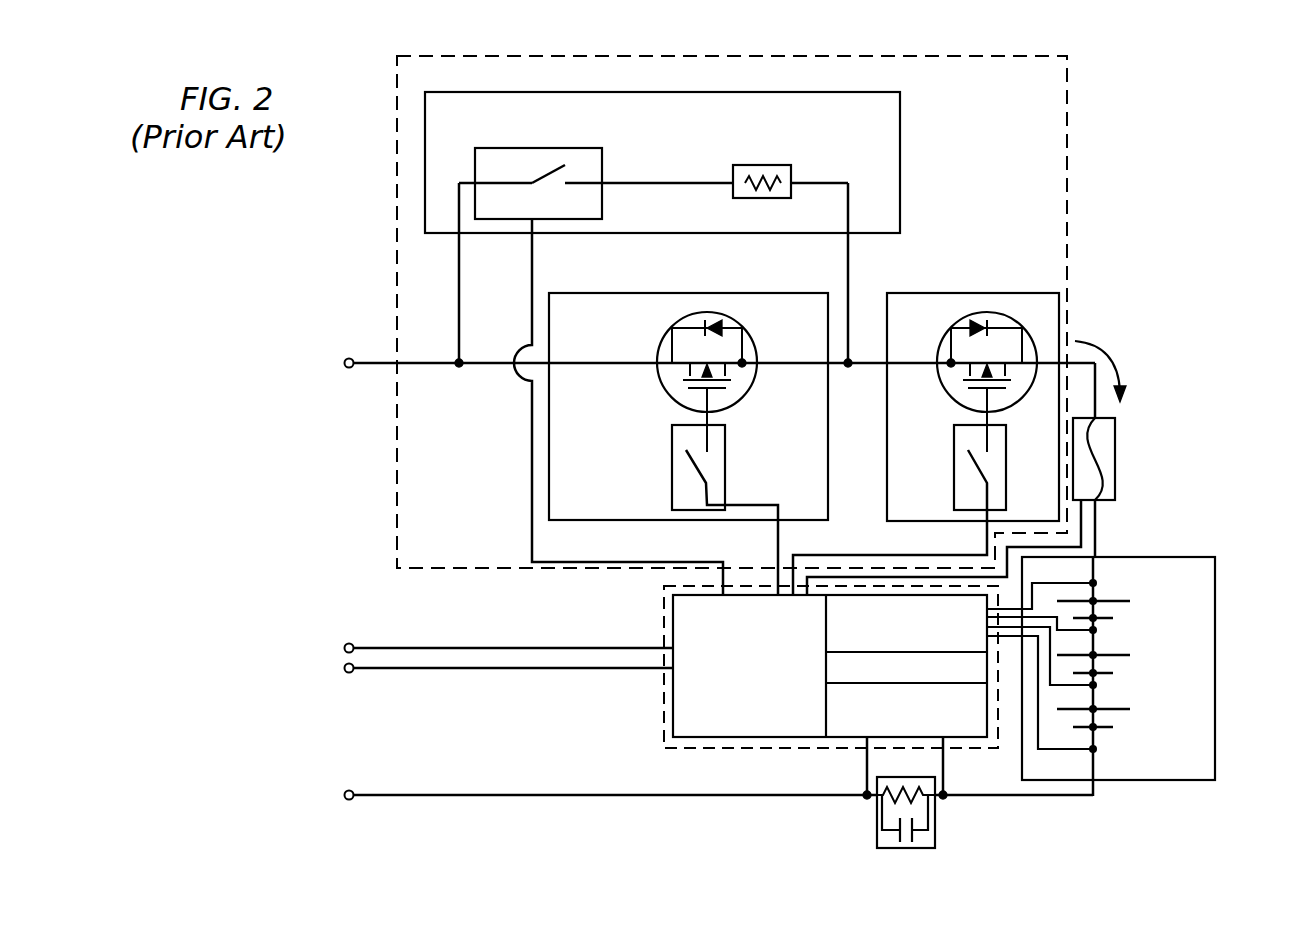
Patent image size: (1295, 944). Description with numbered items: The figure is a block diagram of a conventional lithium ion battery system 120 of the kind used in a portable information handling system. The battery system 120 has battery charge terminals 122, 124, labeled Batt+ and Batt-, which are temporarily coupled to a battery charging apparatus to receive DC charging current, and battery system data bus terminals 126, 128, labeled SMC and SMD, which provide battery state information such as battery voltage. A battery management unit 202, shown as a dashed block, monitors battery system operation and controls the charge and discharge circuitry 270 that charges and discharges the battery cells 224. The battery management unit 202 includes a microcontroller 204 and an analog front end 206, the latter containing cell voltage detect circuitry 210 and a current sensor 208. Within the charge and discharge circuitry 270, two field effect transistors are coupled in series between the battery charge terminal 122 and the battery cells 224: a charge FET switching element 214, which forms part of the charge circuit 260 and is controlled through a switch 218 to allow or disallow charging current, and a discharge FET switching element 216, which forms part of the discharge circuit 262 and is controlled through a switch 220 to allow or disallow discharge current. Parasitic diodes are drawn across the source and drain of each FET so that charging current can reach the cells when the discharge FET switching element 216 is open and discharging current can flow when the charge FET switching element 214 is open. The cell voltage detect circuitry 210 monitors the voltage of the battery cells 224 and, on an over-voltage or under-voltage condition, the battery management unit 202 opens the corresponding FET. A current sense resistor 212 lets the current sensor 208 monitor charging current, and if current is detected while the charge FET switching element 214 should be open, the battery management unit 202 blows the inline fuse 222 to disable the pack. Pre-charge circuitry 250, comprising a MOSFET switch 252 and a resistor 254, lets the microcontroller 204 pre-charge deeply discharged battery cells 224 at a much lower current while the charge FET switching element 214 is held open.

The battery system 120 is at (1152, 135).
The battery charge terminal 122 is at (348, 369).
The battery charge terminal 124 is at (349, 801).
The battery system data bus terminal 126 is at (346, 643).
The battery system data bus terminal 128 is at (349, 674).
The battery management unit 202 is at (664, 633).
The microcontroller 204 is at (715, 746).
The analog front end 206 is at (846, 748).
The current sensor 208 is at (906, 742).
The cell voltage detect circuitry 210 is at (906, 625).
The current sense resistor 212 is at (877, 818).
The charge FET switching element 214 is at (750, 328).
The discharge FET switching element 216 is at (954, 328).
The switch 218 is at (672, 462).
The switch 220 is at (954, 462).
The inline fuse 222 is at (1115, 466).
The battery cells 224 is at (1160, 780).
The pre-charge circuitry 250 is at (833, 92).
The MOSFET switch 252 is at (602, 165).
The resistor 254 is at (760, 165).
The charge circuit 260 is at (718, 293).
The discharge circuit 262 is at (975, 293).
The charge and discharge circuitry 270 is at (1067, 240).